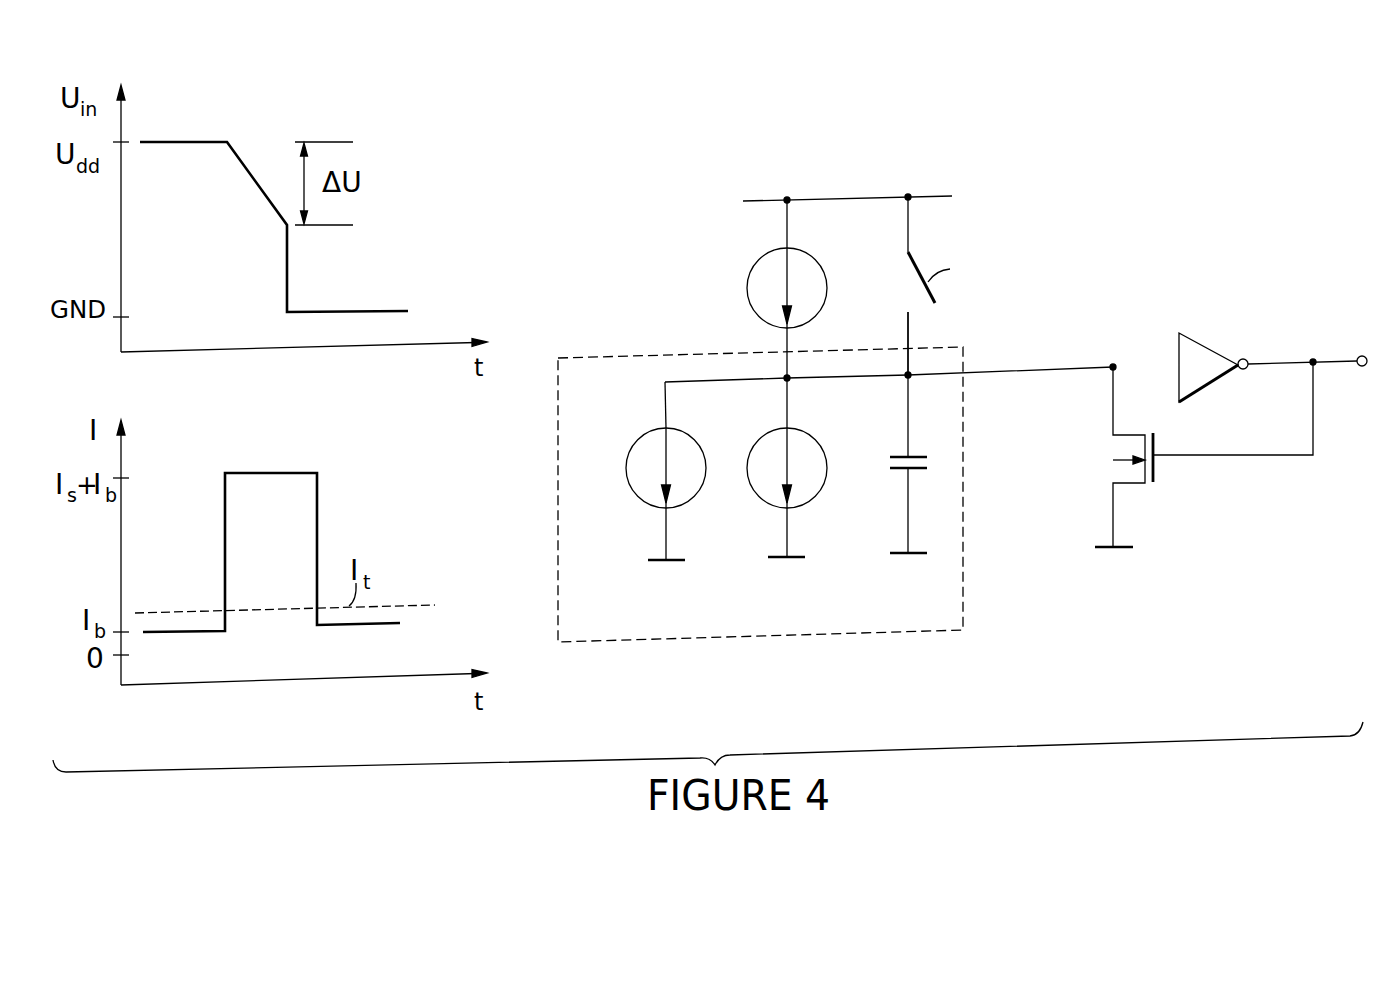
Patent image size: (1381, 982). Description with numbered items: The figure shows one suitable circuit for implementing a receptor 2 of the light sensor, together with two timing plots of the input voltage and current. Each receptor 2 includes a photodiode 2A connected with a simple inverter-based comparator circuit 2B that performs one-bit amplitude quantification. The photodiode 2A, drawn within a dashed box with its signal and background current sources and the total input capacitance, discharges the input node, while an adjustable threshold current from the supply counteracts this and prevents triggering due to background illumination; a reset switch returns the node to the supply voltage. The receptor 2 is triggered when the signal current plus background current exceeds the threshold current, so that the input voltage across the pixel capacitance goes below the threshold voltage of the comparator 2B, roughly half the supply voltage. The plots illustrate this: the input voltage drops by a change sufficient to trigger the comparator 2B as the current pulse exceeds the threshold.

The receptor 2 is at (962, 425).
The photodiode 2A is at (863, 632).
The inverter-based comparator circuit 2B is at (1205, 341).